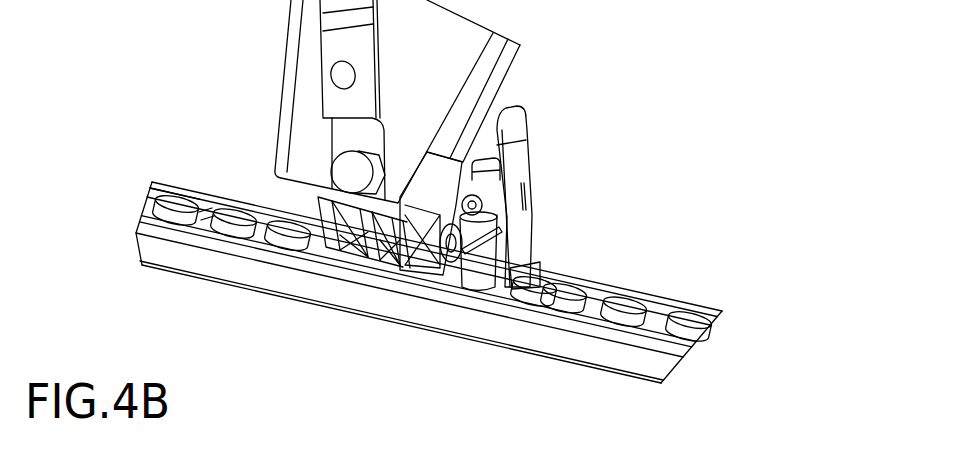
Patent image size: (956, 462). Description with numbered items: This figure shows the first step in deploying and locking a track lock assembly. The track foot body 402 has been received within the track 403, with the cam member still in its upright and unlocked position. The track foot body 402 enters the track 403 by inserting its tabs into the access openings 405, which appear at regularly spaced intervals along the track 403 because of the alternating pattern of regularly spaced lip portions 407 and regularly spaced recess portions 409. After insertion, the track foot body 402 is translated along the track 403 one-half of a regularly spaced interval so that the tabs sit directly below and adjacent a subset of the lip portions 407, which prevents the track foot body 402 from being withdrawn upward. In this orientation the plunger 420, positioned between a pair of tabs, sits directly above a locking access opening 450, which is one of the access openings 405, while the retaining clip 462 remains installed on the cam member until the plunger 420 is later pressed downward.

The track foot body 402 is at (362, 247).
The track 403 is at (160, 253).
The access openings 405 is at (189, 205).
The lip portions 407 is at (208, 213).
The recess portions 409 is at (176, 200).
The plunger 420 is at (480, 277).
The locking access opening 450 is at (467, 283).
The retaining clip 462 is at (443, 270).